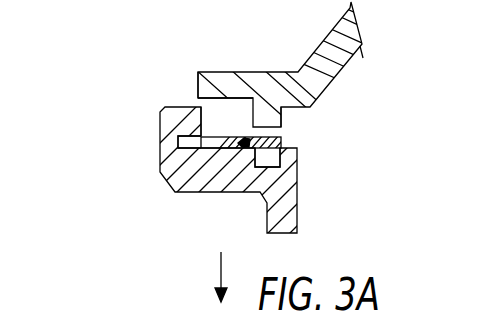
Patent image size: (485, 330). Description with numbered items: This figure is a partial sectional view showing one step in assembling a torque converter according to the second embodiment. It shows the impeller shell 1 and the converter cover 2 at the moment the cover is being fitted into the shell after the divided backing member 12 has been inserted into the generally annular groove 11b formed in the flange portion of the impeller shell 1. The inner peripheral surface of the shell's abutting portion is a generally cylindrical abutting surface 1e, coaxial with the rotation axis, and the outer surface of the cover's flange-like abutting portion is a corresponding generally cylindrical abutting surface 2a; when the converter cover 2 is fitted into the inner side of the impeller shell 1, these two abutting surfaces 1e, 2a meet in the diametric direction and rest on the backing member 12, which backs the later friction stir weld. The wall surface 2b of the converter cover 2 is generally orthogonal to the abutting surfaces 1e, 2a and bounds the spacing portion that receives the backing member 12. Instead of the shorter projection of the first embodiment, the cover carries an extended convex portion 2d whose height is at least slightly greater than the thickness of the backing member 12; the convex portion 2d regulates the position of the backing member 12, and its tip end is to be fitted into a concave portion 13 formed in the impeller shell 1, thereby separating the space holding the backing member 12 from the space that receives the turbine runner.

The impeller shell 1 is at (288, 210).
The abutting surface 1e is at (205, 118).
The groove 11b is at (187, 145).
The backing member 12 is at (281, 141).
The concave portion 13 is at (268, 158).
The converter cover 2 is at (321, 83).
The abutting surface 2a is at (200, 81).
The wall surface 2b is at (229, 98).
The convex portion 2d is at (283, 115).